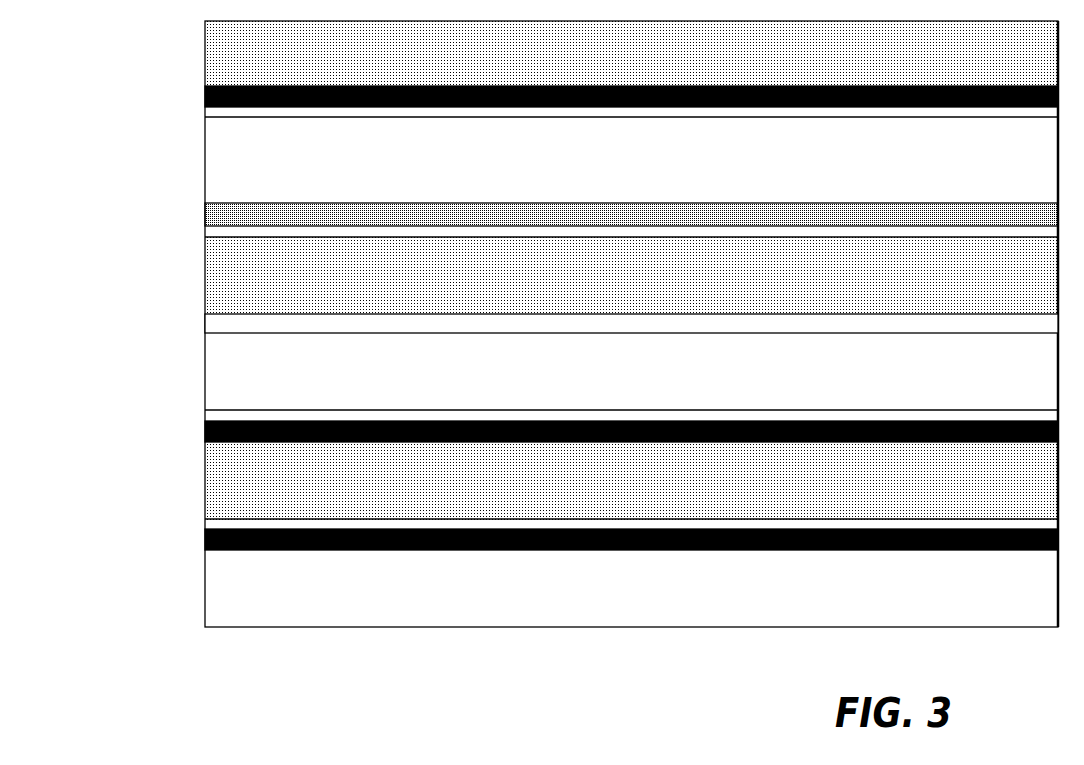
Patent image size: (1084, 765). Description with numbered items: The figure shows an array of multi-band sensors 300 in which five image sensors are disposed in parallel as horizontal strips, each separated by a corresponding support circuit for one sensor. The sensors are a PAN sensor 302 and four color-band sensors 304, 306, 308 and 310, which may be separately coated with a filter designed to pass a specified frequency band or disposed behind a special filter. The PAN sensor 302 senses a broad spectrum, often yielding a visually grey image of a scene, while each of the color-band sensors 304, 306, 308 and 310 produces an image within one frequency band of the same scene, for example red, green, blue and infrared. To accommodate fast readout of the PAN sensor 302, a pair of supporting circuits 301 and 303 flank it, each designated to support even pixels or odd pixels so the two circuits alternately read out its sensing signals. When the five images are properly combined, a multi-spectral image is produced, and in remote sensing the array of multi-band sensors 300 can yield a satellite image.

The array of multi-band sensors 300 is at (631, 346).
The supporting circuit 301 is at (442, 274).
The PAN sensor 302 is at (196, 325).
The supporting circuit 303 is at (442, 376).
The color-band sensor 304 is at (196, 97).
The color-band sensor 306 is at (186, 209).
The color-band sensor 308 is at (197, 441).
The color-band sensor 310 is at (195, 544).